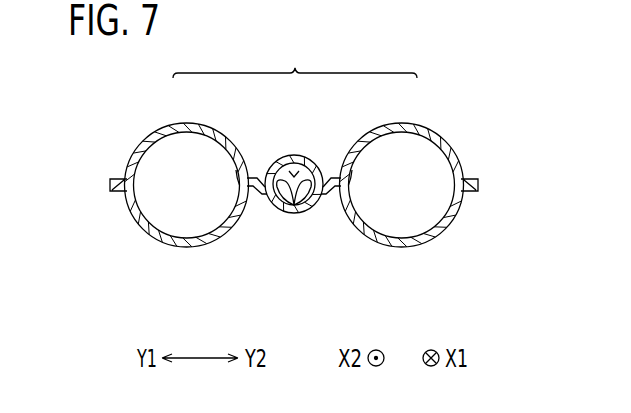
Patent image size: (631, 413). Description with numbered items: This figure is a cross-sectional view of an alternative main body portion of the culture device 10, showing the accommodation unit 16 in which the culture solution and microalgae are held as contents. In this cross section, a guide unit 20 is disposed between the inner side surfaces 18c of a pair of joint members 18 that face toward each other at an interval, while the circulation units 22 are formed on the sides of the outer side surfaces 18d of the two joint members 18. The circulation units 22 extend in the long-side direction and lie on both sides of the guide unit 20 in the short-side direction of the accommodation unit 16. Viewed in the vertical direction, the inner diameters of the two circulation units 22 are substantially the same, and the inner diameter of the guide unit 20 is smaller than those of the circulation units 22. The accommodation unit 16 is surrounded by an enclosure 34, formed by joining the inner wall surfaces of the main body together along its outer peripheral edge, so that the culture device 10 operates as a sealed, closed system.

The culture device 10 is at (522, 43).
The accommodation unit 16 is at (295, 59).
The joint members 18 is at (257, 192).
The inner side surfaces 18c is at (293, 206).
The outer side surfaces 18d is at (243, 181).
The guide unit 20 is at (294, 176).
The circulation units 22 is at (185, 165).
The enclosure 34 is at (120, 178).